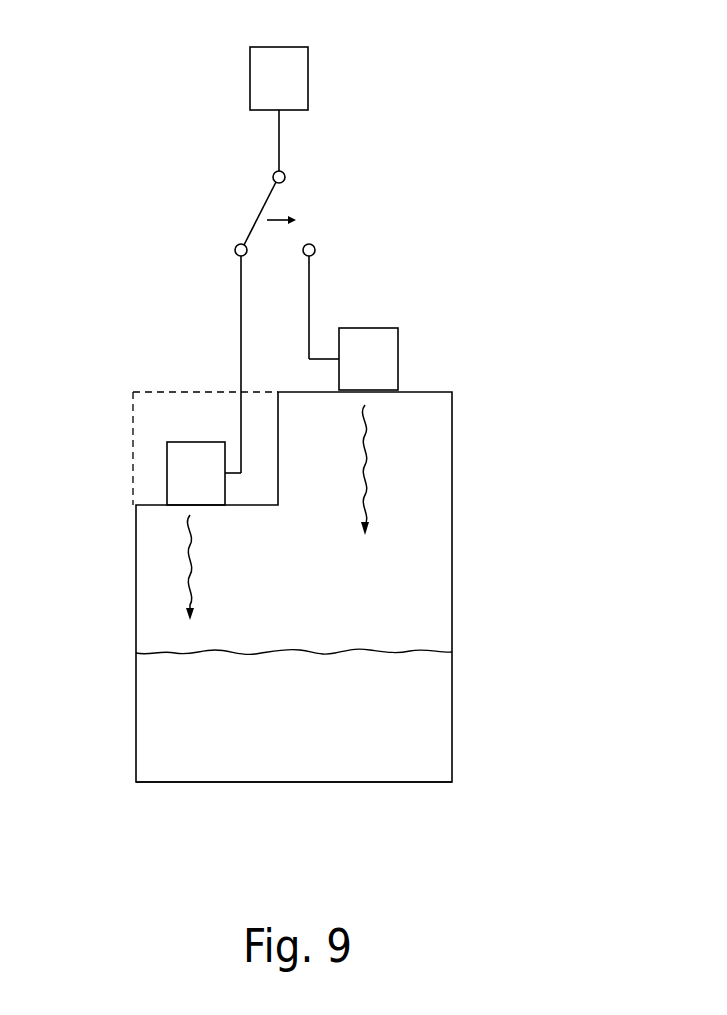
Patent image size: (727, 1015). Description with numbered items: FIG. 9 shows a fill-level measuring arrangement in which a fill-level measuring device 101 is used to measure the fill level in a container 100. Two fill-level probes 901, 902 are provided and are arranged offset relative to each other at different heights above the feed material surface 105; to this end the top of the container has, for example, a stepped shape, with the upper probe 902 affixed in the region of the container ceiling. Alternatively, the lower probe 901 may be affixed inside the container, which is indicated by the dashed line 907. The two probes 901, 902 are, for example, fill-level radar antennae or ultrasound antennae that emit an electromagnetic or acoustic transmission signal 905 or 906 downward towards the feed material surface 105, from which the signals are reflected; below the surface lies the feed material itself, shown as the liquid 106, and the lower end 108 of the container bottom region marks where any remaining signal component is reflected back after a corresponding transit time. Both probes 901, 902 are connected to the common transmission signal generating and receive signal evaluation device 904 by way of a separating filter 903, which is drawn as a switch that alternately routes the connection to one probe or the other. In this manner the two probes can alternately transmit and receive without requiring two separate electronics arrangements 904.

The container 100 is at (452, 567).
The fill-level measuring device 101 is at (420, 188).
The feed material surface 105 is at (257, 653).
The liquid 106 is at (439, 724).
The lower end 108 is at (365, 785).
The fill-level probe 901 is at (165, 461).
The fill-level probe 902 is at (398, 355).
The separating filter 903 is at (262, 212).
The transmission signal generating and receive signal evaluation device 904 is at (295, 81).
The transmission signal 905 is at (185, 585).
The transmission signal 906 is at (363, 448).
The dashed line 907 is at (167, 388).